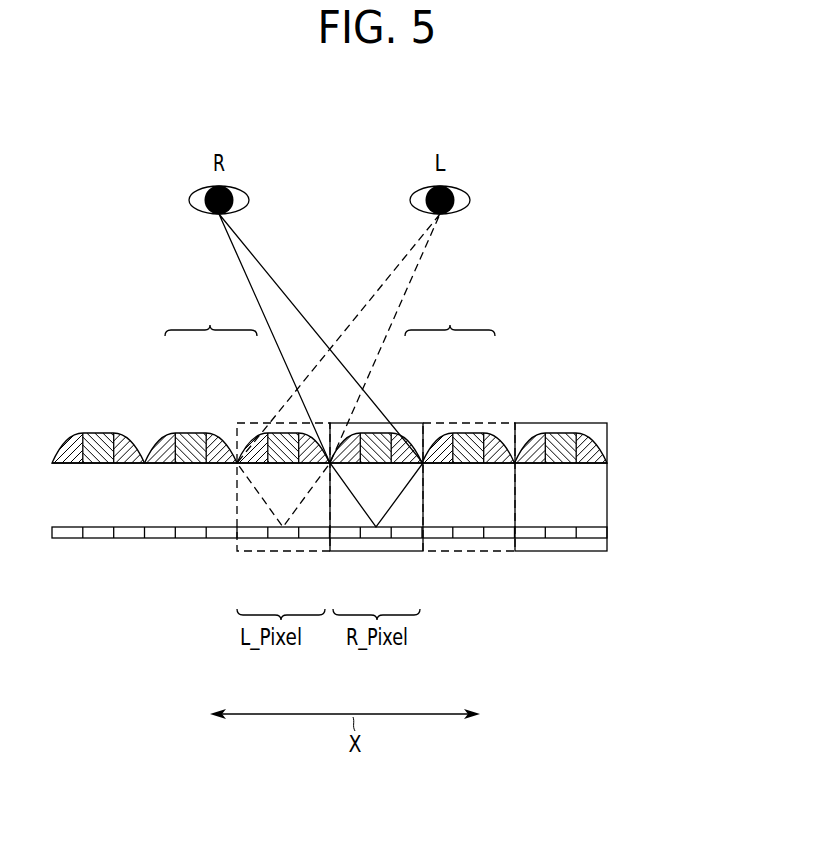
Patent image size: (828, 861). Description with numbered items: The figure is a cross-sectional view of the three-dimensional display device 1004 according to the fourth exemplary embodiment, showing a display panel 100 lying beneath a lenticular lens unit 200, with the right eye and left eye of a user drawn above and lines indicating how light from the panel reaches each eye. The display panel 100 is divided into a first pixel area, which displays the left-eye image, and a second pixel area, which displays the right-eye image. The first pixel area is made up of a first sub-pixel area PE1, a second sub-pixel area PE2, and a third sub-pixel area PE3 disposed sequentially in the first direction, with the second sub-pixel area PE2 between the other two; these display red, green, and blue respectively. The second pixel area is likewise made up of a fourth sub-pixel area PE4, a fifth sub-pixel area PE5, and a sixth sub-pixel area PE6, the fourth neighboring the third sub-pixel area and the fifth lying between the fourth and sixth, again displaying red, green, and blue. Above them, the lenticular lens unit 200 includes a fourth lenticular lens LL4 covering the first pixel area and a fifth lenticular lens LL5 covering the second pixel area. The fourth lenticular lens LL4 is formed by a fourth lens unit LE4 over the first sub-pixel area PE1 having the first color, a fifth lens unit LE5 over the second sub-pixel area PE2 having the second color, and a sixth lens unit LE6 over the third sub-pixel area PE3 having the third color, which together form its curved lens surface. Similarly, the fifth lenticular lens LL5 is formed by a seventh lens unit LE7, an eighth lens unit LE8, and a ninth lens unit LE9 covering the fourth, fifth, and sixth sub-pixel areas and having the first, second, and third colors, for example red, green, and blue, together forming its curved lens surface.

The 3D display device 1004 is at (352, 118).
The lenticular lens unit 200 is at (612, 450).
The display panel 100 is at (612, 530).
The fourth lenticular lens LL4 is at (211, 317).
The fifth lenticular lens LL5 is at (450, 317).
The fourth lens unit LE4 is at (248, 433).
The fifth lens unit LE5 is at (275, 432).
The sixth lens unit LE6 is at (303, 433).
The seventh lens unit LE7 is at (355, 433).
The eighth lens unit LE8 is at (382, 433).
The ninth lens unit LE9 is at (412, 433).
The first sub-pixel area PE1 is at (251, 535).
The second sub-pixel area PE2 is at (284, 535).
The third sub-pixel area PE3 is at (316, 535).
The fourth sub-pixel area PE4 is at (346, 535).
The fifth sub-pixel area PE5 is at (376, 535).
The sixth sub-pixel area PE6 is at (408, 535).